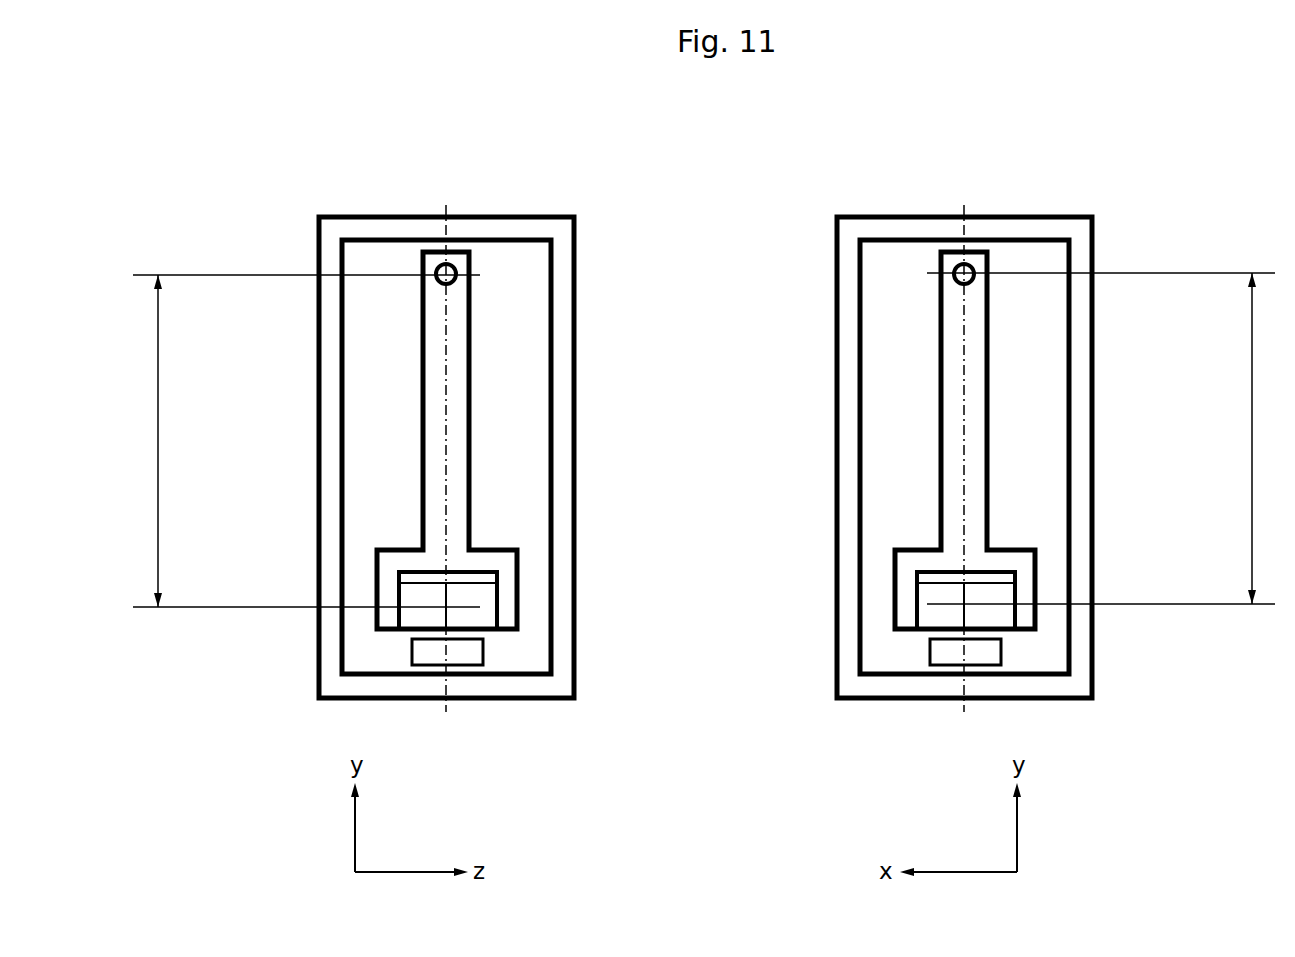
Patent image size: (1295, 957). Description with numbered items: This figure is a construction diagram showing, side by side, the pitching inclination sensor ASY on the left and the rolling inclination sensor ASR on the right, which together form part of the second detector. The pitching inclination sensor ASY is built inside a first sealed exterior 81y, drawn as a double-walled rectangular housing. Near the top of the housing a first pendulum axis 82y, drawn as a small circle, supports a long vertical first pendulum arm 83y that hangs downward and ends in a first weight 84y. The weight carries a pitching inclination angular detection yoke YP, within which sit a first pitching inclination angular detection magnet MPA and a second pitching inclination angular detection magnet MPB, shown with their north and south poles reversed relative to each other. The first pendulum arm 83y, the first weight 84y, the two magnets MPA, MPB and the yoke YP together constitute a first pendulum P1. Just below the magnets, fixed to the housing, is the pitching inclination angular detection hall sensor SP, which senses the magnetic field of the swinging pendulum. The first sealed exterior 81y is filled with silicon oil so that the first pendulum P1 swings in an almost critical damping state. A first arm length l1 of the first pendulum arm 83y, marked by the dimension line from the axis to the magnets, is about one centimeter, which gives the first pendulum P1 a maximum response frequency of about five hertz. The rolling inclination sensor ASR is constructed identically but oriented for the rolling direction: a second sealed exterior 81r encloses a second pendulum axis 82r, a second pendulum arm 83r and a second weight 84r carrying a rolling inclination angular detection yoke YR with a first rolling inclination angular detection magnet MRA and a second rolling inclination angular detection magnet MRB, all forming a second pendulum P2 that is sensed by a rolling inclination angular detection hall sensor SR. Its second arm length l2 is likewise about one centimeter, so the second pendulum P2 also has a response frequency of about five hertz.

The pitching inclination sensor ASY is at (297, 185).
The rolling inclination sensor ASR is at (815, 185).
The first sealed exterior 81y is at (538, 217).
The second sealed exterior 81r is at (1056, 217).
The first pendulum axis 82y is at (452, 282).
The second pendulum axis 82r is at (970, 282).
The first pendulum arm 83y is at (435, 423).
The second pendulum arm 83r is at (953, 423).
The first weight 84y is at (390, 562).
The second weight 84r is at (907, 562).
The first pendulum P1 is at (482, 422).
The second pendulum P2 is at (1000, 420).
The pitching inclination angular detection yoke YP is at (413, 577).
The rolling inclination angular detection yoke YR is at (930, 577).
The first pitching inclination angular detection magnet MPA is at (410, 605).
The second pitching inclination angular detection magnet MPB is at (482, 595).
The first rolling inclination angular detection magnet MRA is at (928, 605).
The second rolling inclination angular detection magnet MRB is at (1000, 595).
The pitching inclination angular detection hall sensor SP is at (483, 652).
The rolling inclination angular detection hall sensor SR is at (1001, 652).
The first arm length l1 is at (144, 441).
The second arm length l2 is at (1267, 438).